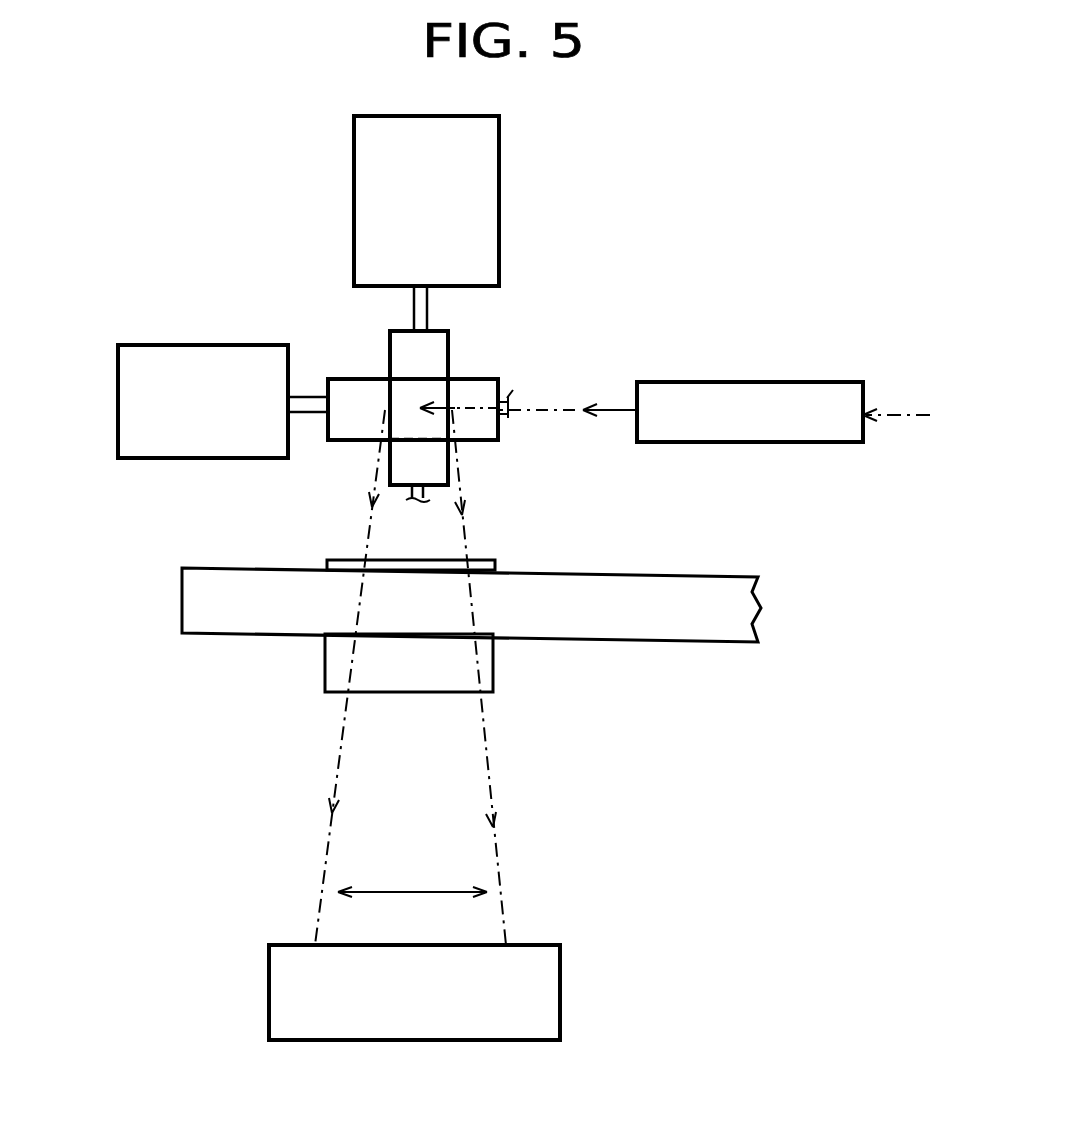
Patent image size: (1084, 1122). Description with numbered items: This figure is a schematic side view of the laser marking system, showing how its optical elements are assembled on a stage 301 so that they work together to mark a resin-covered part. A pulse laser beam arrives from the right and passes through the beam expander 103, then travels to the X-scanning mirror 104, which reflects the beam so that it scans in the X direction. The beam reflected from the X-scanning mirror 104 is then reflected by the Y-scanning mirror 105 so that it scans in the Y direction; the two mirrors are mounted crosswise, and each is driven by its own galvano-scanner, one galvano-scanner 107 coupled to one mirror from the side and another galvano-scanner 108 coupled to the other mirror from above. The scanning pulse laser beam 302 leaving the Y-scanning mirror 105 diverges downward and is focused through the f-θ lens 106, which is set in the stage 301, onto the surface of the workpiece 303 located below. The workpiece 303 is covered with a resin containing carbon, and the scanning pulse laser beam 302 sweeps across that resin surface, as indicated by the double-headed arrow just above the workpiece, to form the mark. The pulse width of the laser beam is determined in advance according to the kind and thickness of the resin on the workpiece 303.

The beam expander 103 is at (747, 442).
The X-scanning mirror 104 is at (450, 345).
The Y-scanning mirror 105 is at (352, 379).
The f-θ lens 106 is at (496, 687).
The galvano-scanner 107 is at (203, 458).
The galvano-scanner 108 is at (499, 210).
The stage 301 is at (697, 577).
The scanning pulse laser beam 302 is at (490, 778).
The workpiece 303 is at (560, 997).